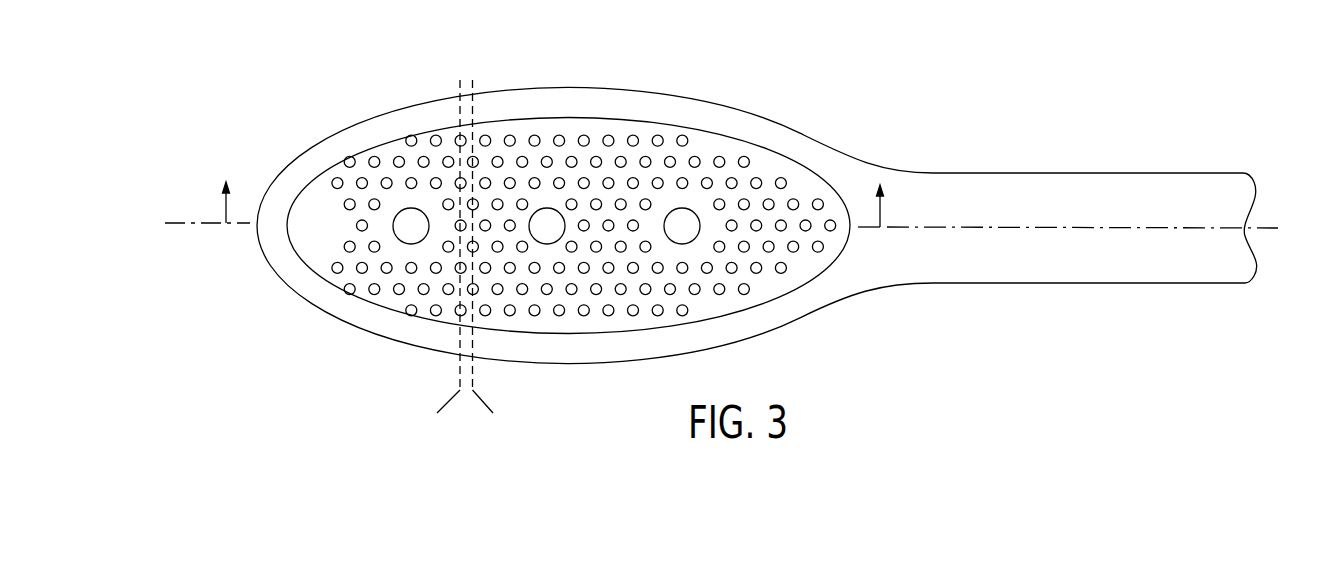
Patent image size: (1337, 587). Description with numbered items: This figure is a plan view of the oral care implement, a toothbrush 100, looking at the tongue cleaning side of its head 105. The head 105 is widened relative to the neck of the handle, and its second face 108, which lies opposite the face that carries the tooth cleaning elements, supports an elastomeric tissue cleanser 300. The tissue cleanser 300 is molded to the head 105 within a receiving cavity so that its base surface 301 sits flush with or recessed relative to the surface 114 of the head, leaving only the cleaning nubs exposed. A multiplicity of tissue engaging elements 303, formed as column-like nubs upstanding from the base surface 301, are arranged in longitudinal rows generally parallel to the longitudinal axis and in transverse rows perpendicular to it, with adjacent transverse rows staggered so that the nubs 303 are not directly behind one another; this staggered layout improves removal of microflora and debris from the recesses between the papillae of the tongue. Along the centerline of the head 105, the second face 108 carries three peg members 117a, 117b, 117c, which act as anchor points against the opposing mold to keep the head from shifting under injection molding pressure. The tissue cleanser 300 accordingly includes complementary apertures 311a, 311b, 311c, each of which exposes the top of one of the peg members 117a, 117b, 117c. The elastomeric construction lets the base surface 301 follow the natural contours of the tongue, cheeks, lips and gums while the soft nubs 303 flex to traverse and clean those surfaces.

The toothbrush 100 is at (760, 54).
The head 105 is at (309, 336).
The second face 108 is at (288, 244).
The surface of the head 114 is at (658, 107).
The tissue cleanser 300 is at (767, 164).
The base surface 301 is at (305, 190).
The tissue engaging elements 303 is at (412, 135).
The first aperture 311a is at (408, 207).
The second aperture 311b is at (548, 209).
The third aperture 311c is at (682, 245).
The first peg member 117a is at (411, 228).
The second peg member 117b is at (547, 232).
The third peg member 117c is at (685, 228).